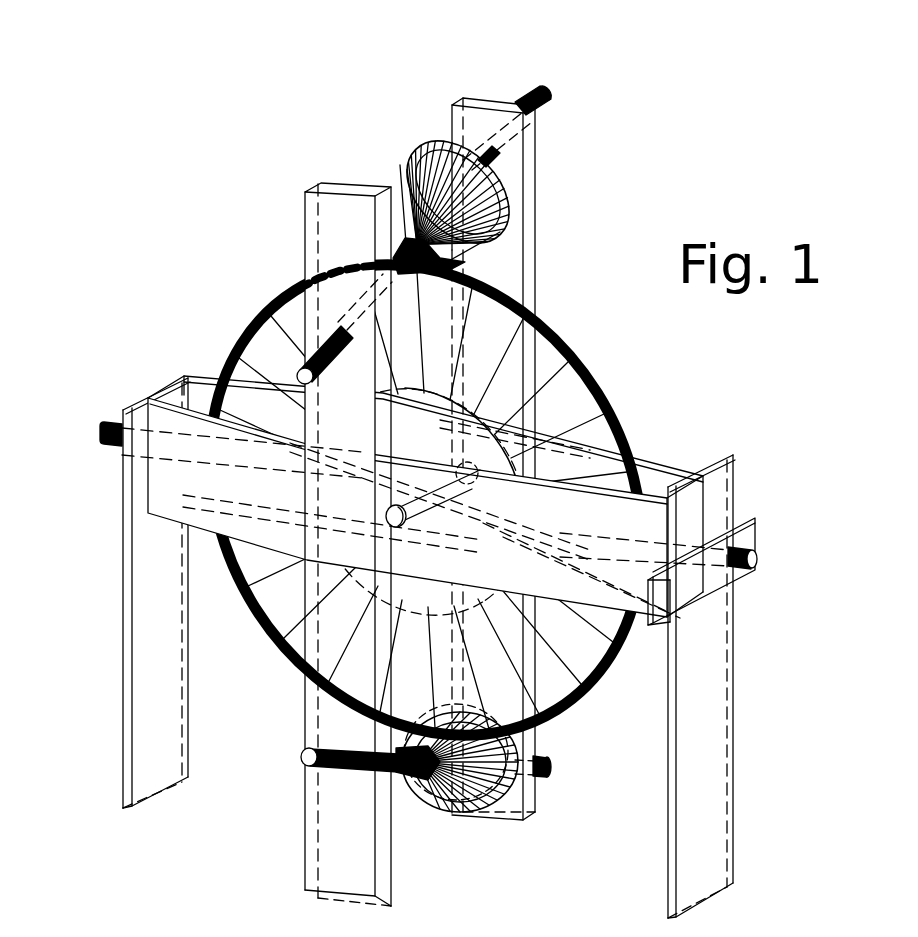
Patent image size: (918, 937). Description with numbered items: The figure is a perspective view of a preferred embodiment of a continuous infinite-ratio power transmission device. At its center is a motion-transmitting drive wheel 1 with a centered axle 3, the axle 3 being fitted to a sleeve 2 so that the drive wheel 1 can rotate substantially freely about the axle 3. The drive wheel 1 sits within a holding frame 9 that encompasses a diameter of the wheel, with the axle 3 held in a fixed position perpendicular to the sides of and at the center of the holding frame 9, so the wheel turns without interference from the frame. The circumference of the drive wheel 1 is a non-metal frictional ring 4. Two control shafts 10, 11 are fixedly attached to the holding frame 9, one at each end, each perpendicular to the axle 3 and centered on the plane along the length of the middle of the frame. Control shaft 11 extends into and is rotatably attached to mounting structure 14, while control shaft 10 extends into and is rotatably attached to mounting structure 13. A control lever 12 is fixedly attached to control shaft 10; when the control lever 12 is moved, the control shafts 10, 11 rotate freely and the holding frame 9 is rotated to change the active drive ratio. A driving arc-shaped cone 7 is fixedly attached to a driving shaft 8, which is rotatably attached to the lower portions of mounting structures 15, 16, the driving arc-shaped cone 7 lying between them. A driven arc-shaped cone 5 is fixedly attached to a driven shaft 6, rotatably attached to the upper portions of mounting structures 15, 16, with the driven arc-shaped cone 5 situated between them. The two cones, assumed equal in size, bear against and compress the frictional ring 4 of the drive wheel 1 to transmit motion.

The drive wheel 1 is at (278, 378).
The sleeve 2 is at (560, 366).
The axle 3 is at (392, 532).
The frictional ring 4 is at (594, 385).
The driven arc-shaped cone 5 is at (520, 224).
The driven shaft 6 is at (548, 98).
The driving arc-shaped cone 7 is at (453, 826).
The driving shaft 8 is at (550, 775).
The holding frame 9 is at (690, 470).
The control shaft 10 is at (758, 559).
The control shaft 11 is at (103, 426).
The control lever 12 is at (750, 525).
The mounting structure 13 is at (730, 486).
The mounting structure 14 is at (127, 410).
The mounting structure 15 is at (318, 188).
The mounting structure 16 is at (476, 97).